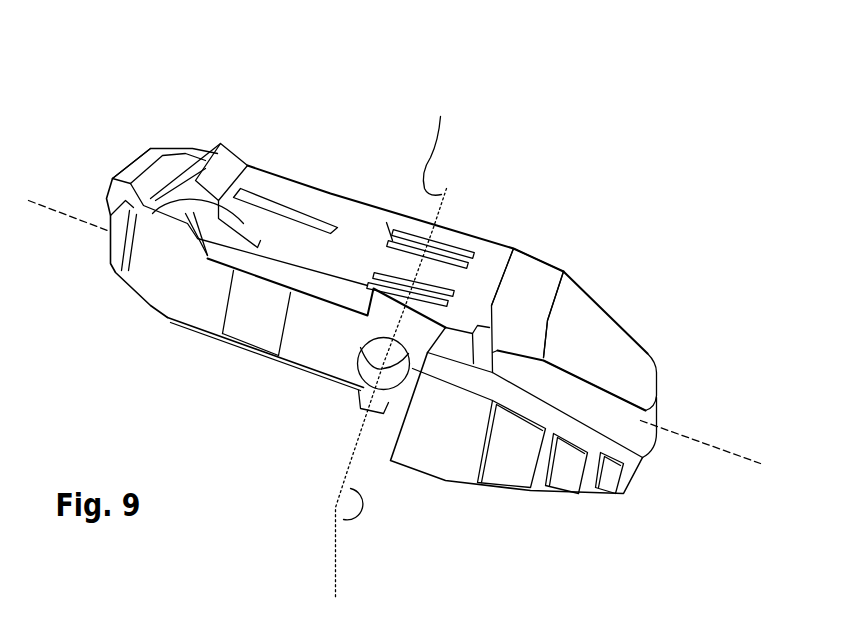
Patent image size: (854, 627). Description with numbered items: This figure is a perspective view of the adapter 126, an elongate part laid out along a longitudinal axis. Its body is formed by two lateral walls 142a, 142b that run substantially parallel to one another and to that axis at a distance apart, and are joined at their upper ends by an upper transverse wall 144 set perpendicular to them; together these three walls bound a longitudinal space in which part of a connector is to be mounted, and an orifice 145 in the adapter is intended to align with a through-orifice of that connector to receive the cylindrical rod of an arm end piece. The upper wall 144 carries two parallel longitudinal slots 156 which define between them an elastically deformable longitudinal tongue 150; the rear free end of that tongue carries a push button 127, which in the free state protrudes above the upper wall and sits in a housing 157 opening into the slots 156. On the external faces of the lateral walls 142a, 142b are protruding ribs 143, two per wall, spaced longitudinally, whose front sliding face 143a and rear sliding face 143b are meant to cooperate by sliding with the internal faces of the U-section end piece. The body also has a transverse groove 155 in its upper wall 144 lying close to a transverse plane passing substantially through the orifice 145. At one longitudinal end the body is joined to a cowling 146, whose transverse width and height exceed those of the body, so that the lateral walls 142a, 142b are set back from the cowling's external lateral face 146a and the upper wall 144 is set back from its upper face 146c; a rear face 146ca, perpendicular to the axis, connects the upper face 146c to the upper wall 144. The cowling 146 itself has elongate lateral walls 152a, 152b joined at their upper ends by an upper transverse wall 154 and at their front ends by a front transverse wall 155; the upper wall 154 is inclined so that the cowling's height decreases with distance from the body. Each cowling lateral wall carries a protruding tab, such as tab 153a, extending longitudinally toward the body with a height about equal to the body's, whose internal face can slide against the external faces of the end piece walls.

The adapter 126 is at (628, 193).
The push button 127 is at (237, 160).
The lateral wall 142a is at (313, 338).
The lateral wall 142b is at (264, 175).
The protruding ribs 143 is at (373, 470).
The front sliding face 143a is at (453, 348).
The rear sliding face 143b is at (257, 327).
The upper transverse wall 144 is at (362, 218).
The orifice 145 is at (392, 375).
The cowling 146 is at (643, 373).
The lateral face of cowling 146a is at (445, 395).
The upper face of cowling 146c is at (538, 285).
The rear face 146ca is at (497, 262).
The longitudinal tongue 150 is at (170, 201).
The lateral wall of cowling 152a is at (577, 403).
The lateral wall of cowling 152b is at (620, 327).
The protruding tab 153a is at (500, 450).
The upper transverse wall of cowling 154 is at (573, 320).
The front transverse wall / transverse groove 155 is at (386, 220).
The longitudinal slots 156 is at (323, 255).
The housing 157 is at (152, 185).